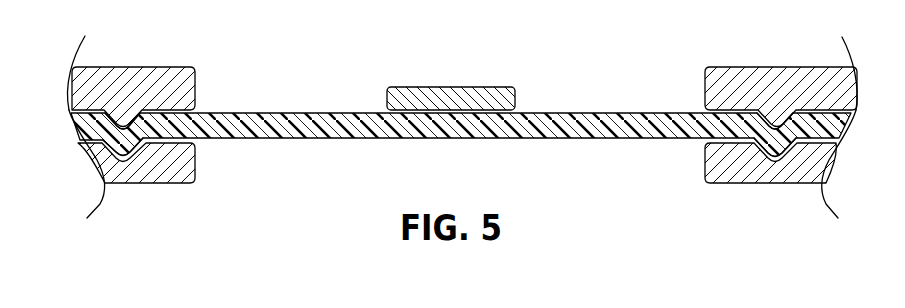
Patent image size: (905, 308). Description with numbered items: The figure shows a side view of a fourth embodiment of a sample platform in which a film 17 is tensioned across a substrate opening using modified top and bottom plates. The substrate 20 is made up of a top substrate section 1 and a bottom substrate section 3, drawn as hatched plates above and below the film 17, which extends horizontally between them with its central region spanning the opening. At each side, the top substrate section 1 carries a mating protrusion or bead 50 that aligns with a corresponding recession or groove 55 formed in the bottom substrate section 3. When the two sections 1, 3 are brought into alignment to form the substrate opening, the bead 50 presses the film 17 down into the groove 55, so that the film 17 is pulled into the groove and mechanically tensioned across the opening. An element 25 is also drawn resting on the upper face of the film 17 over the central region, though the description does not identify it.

The top substrate section 1 is at (176, 67).
The bottom substrate section 3 is at (176, 183).
The film 17 is at (605, 120).
The substrate 20 is at (181, 101).
The electronic component 25 is at (447, 87).
The protrusion or bead 50 is at (125, 106).
The recession or groove 55 is at (124, 162).